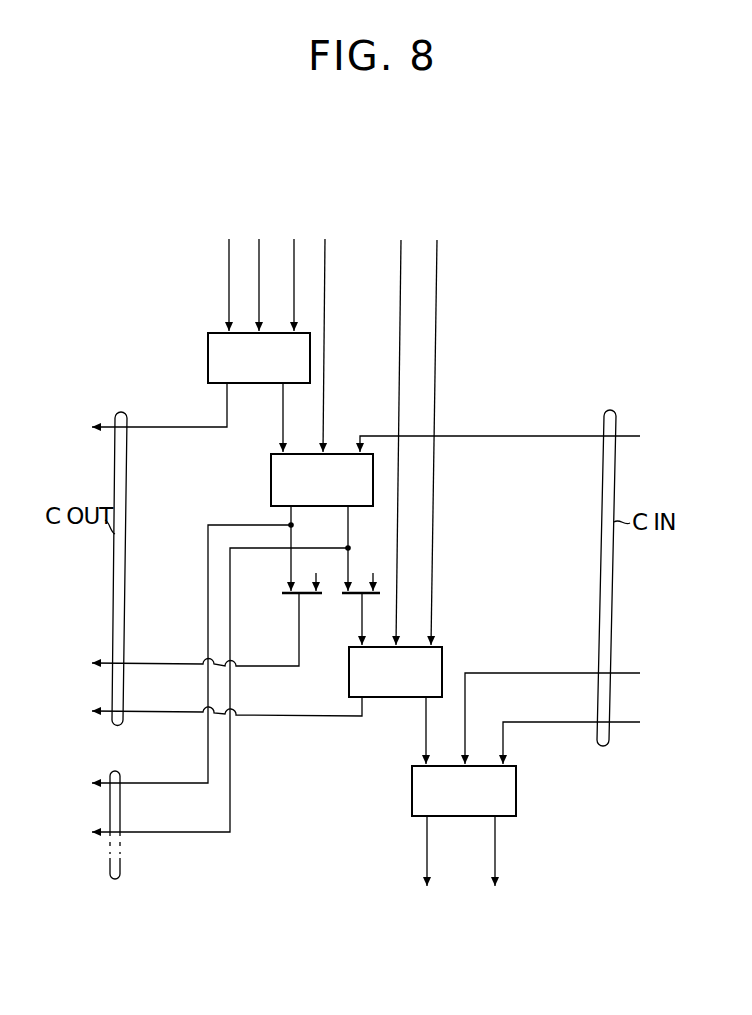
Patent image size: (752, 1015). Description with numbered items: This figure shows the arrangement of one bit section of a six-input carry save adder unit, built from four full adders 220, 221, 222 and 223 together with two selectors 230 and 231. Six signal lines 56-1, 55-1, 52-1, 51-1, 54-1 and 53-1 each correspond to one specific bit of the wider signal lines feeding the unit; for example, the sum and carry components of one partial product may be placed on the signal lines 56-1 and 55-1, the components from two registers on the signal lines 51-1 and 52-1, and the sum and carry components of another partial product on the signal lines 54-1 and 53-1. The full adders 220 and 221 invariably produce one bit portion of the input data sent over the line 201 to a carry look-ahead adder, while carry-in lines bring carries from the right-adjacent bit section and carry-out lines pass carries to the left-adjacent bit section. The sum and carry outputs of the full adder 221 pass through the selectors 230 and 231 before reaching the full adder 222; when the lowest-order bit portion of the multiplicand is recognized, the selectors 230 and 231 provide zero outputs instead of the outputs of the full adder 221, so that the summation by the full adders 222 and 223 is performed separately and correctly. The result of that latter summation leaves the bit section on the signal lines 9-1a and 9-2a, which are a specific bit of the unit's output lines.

The signal line 56-1 is at (229, 262).
The signal line 55-1 is at (259, 265).
The signal line 52-1 is at (294, 262).
The signal line 51-1 is at (325, 258).
The signal line 54-1 is at (401, 262).
The signal line 53-1 is at (437, 270).
The full adder 220 is at (208, 357).
The full adder 221 is at (271, 482).
The full adder 222 is at (442, 660).
The full adder 223 is at (516, 800).
The selector 230 is at (290, 596).
The selector 231 is at (350, 596).
The input data line 201 is at (120, 868).
The signal line 9-2a is at (427, 857).
The signal line 9-1a is at (495, 857).